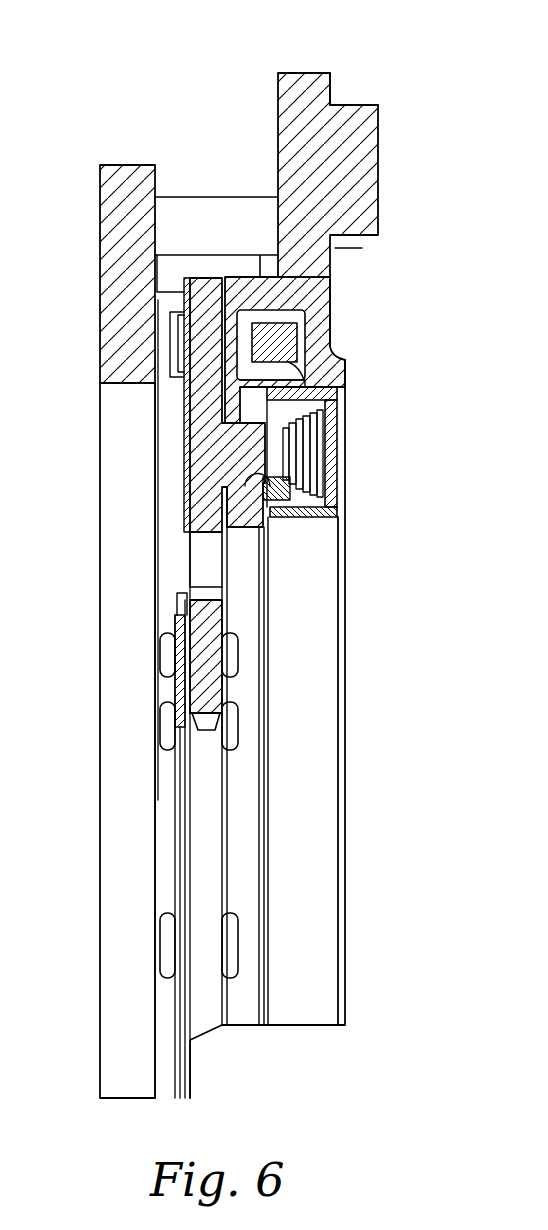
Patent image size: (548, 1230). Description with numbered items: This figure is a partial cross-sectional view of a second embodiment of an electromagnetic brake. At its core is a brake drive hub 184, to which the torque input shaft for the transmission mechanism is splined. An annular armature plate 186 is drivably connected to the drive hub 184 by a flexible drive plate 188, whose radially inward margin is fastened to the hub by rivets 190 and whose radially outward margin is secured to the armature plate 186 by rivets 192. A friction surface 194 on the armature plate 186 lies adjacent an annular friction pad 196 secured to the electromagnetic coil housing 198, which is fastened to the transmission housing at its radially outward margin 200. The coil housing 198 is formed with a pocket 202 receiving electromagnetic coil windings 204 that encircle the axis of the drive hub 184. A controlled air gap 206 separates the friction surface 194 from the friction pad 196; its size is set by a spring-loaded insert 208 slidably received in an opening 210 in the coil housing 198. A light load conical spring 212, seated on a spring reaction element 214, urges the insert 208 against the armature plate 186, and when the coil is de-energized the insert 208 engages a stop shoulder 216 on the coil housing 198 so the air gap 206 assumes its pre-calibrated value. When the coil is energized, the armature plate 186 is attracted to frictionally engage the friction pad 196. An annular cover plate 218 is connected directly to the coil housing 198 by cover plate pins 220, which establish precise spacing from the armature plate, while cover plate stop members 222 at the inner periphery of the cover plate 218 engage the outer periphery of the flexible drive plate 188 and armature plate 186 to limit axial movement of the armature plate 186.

The brake drive hub 184 is at (207, 680).
The annular armature plate 186 is at (205, 473).
The flexible drive plate 188 is at (187, 578).
The rivets 190 is at (162, 660).
The rivets 192 is at (175, 347).
The friction surface 194 is at (259, 255).
The annular friction pad 196 is at (297, 340).
The electromagnetic coil housing 198 is at (332, 175).
The radially outward margin 200 is at (352, 103).
The pocket 202 is at (292, 368).
The electromagnetic coil windings 204 is at (330, 327).
The controlled air gap 206 is at (222, 385).
The spring-loaded insert 208 is at (285, 500).
The opening 210 is at (268, 490).
The light load conical spring 212 is at (313, 453).
The spring reaction element 214 is at (323, 518).
The stop shoulder 216 is at (315, 413).
The annular cover plate 218 is at (128, 210).
The cover plate pins 220 is at (212, 197).
The cover plate stop members 222 is at (168, 290).